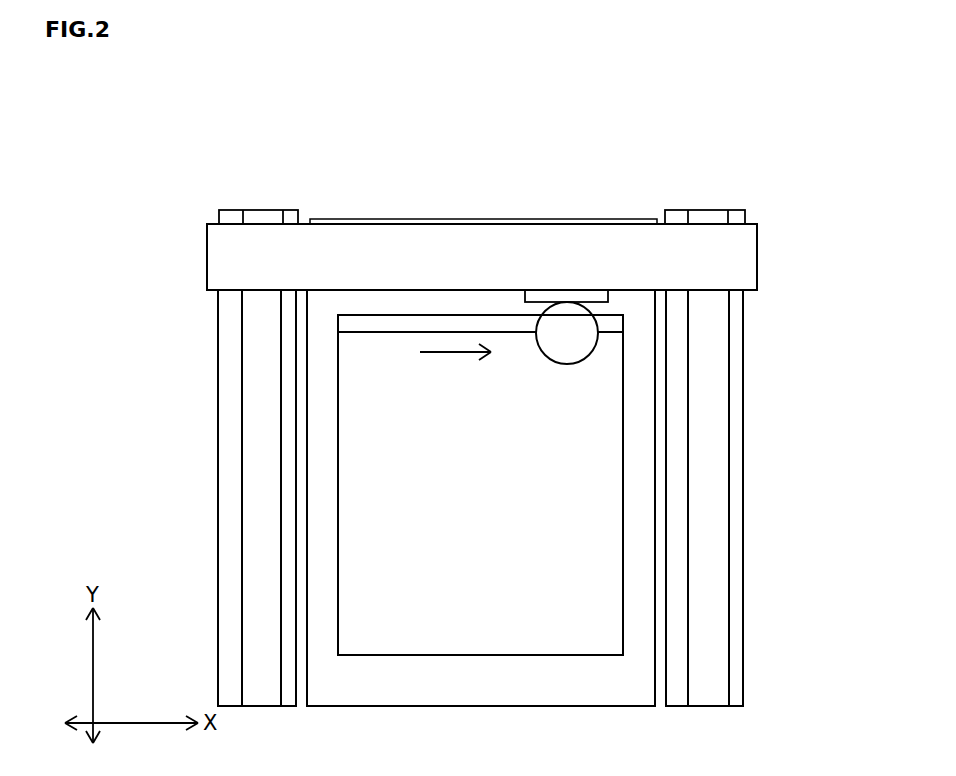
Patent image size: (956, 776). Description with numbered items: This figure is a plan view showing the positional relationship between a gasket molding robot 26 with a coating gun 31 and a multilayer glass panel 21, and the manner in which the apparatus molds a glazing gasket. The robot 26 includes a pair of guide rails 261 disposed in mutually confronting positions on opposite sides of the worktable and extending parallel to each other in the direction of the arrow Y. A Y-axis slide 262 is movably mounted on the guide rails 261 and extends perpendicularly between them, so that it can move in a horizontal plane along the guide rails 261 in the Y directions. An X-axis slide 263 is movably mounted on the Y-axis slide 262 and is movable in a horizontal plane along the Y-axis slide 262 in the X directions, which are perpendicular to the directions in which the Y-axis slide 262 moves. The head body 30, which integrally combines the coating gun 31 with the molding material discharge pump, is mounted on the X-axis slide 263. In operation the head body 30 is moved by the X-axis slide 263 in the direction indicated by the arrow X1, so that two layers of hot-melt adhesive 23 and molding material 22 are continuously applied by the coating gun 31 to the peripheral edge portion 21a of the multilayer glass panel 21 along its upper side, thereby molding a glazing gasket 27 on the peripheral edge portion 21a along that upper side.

The multilayer glass panel 21 is at (588, 500).
The peripheral edge portion 21a is at (607, 453).
The molding material 22 is at (420, 322).
The hot-melt adhesive 23 is at (368, 318).
The robot 26 is at (750, 203).
The glazing gasket 27 is at (480, 323).
The head body 30 is at (648, 377).
The coating gun 31 is at (572, 336).
The guide rails 261 is at (258, 463).
The Y-axis slide 262 is at (723, 262).
The X-axis slide 263 is at (592, 300).